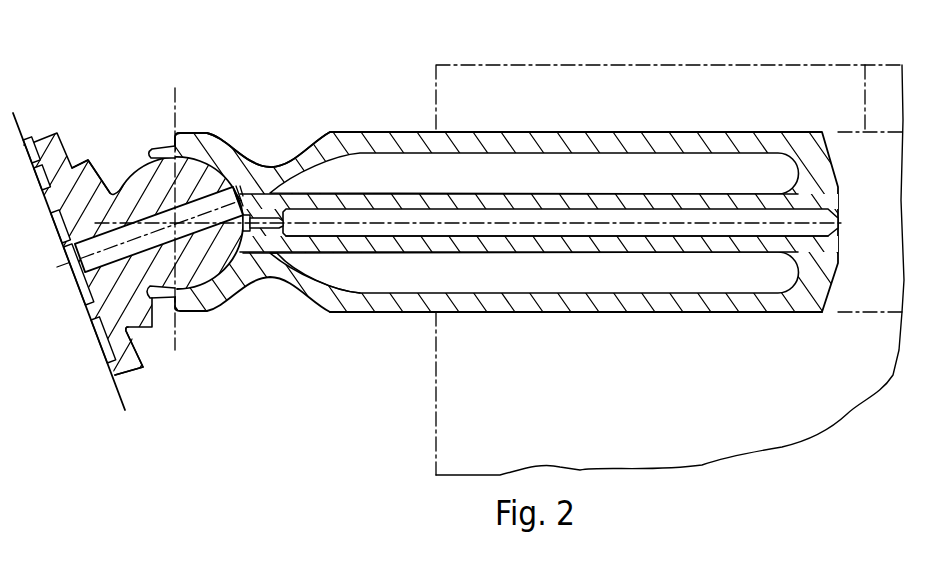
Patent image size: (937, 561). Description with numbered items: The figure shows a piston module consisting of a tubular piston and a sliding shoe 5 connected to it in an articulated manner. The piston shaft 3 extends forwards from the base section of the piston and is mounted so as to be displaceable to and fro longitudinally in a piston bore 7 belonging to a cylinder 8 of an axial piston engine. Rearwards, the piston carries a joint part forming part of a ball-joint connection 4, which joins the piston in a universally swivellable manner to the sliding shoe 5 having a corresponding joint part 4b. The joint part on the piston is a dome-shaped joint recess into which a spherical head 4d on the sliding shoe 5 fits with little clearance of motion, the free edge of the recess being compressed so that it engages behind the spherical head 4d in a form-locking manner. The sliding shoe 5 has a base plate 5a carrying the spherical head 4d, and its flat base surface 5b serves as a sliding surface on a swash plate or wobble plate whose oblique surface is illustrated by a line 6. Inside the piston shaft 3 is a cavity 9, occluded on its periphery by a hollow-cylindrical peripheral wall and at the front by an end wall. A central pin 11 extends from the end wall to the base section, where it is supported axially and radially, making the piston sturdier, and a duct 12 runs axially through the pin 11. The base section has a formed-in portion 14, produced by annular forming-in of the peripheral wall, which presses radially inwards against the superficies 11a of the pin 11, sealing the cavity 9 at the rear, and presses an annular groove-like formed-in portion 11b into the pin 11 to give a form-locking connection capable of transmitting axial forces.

The piston shaft 3 is at (495, 220).
The ball-joint connection 4 is at (152, 222).
The joint part 4b is at (123, 163).
The spherical head 4d is at (145, 164).
The sliding shoe 5 is at (153, 264).
The base plate 5a is at (135, 366).
The base surface 5b is at (82, 318).
The line 6 is at (120, 402).
The piston bore 7 is at (862, 64).
The cylinder 8 is at (662, 90).
The cavity 9 is at (417, 280).
The pin 11 is at (530, 241).
The superficies 11a is at (474, 256).
The formed-in portion 11b is at (278, 258).
The duct 12 is at (647, 235).
The formed-in portion 14 is at (297, 155).